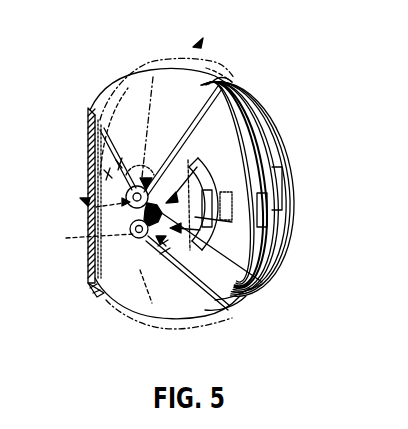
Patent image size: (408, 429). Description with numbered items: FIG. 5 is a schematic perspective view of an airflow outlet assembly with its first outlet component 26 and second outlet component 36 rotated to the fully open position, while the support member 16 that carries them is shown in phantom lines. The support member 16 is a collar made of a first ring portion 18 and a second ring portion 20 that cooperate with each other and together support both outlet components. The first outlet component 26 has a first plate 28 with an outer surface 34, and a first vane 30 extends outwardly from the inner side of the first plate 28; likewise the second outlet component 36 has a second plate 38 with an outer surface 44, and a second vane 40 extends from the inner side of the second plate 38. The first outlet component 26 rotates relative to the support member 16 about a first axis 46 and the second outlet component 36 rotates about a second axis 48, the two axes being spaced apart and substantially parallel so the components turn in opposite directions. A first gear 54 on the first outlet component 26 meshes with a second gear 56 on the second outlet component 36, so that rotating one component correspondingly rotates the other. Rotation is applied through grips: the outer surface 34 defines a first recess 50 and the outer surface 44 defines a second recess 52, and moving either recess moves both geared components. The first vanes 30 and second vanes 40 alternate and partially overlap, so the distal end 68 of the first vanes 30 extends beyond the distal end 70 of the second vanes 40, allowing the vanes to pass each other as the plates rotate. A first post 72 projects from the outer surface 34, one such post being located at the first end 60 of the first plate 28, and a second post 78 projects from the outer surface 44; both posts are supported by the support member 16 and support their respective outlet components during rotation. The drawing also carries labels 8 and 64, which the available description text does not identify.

The tissue thickness compensator applicator 8 is at (92, 170).
The support member 16 is at (199, 41).
The first ring portion 18 is at (222, 52).
The second ring portion 20 is at (144, 58).
The first outlet component 26 is at (268, 112).
The first plate 28 is at (262, 146).
The first vane 30 is at (294, 190).
The outer surface 34 is at (100, 108).
The second outlet component 36 is at (258, 292).
The second plate 38 is at (244, 300).
The second vane 40 is at (284, 246).
The outer surface 44 is at (100, 288).
The first axis 46 is at (84, 200).
The second axis 48 is at (65, 238).
The first recess 50 is at (228, 75).
The second recess 52 is at (236, 326).
The first gear 54 is at (206, 180).
The second gear 56 is at (256, 280).
The first end 60 is at (150, 176).
The second cable 64 is at (180, 252).
The distal end 68 is at (276, 236).
The distal end 70 is at (262, 180).
The first post 72 is at (128, 186).
The second post 78 is at (137, 246).